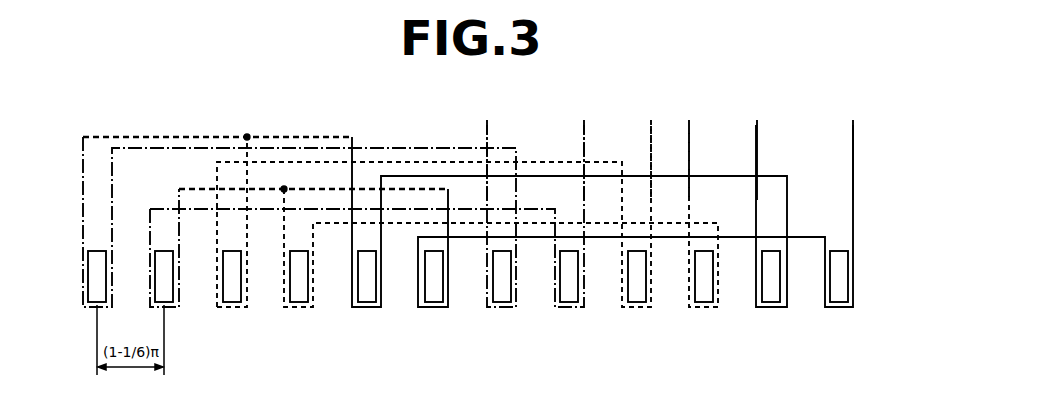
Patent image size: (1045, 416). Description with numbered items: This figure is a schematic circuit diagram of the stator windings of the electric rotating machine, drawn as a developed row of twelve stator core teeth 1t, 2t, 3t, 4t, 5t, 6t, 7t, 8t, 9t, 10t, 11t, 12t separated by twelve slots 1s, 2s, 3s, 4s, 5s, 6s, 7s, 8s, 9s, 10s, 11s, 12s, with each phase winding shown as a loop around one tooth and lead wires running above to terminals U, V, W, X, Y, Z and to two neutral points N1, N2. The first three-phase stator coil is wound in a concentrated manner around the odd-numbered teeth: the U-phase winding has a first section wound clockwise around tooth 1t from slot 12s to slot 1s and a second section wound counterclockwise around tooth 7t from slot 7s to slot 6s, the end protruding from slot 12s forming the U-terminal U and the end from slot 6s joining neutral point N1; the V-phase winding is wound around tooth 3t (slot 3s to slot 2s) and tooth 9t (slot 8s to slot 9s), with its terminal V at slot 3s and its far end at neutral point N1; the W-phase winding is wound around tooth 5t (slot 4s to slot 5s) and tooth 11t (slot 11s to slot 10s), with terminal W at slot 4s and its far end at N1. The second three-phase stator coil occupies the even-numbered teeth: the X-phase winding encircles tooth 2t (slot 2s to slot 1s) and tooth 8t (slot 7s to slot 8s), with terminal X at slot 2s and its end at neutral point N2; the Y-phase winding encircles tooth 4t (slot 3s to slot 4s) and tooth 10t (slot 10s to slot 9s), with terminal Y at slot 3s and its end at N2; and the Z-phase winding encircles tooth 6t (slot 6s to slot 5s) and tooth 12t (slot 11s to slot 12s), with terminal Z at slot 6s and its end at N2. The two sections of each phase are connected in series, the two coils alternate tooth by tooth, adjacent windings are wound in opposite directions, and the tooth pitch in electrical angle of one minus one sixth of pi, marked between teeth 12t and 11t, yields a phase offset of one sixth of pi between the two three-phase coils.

The stator core tooth 1t is at (835, 294).
The stator core tooth 2t is at (767, 294).
The stator core tooth 3t is at (700, 294).
The stator core tooth 4t is at (633, 294).
The stator core tooth 5t is at (565, 294).
The stator core tooth 6t is at (498, 294).
The stator core tooth 7t is at (430, 294).
The stator core tooth 8t is at (363, 294).
The stator core tooth 9t is at (295, 294).
The stator core tooth 10t is at (229, 294).
The stator core tooth 11t is at (166, 296).
The stator core tooth 12t is at (95, 297).
The slot 1s is at (805, 276).
The slot 2s is at (737, 276).
The slot 3s is at (670, 276).
The slot 4s is at (603, 276).
The slot 5s is at (536, 276).
The slot 6s is at (468, 276).
The slot 7s is at (401, 276).
The slot 8s is at (333, 276).
The slot 9s is at (266, 276).
The slot 10s is at (198, 276).
The slot 11s is at (131, 276).
The slot 12s is at (469, 276).
The neutral point N1 is at (284, 189).
The neutral point N2 is at (247, 137).
The U-terminal U is at (853, 148).
The V-terminal V is at (689, 148).
The W-terminal W is at (584, 148).
The X-terminal X is at (757, 148).
The Y-terminal Y is at (651, 148).
The Z-terminal Z is at (487, 148).